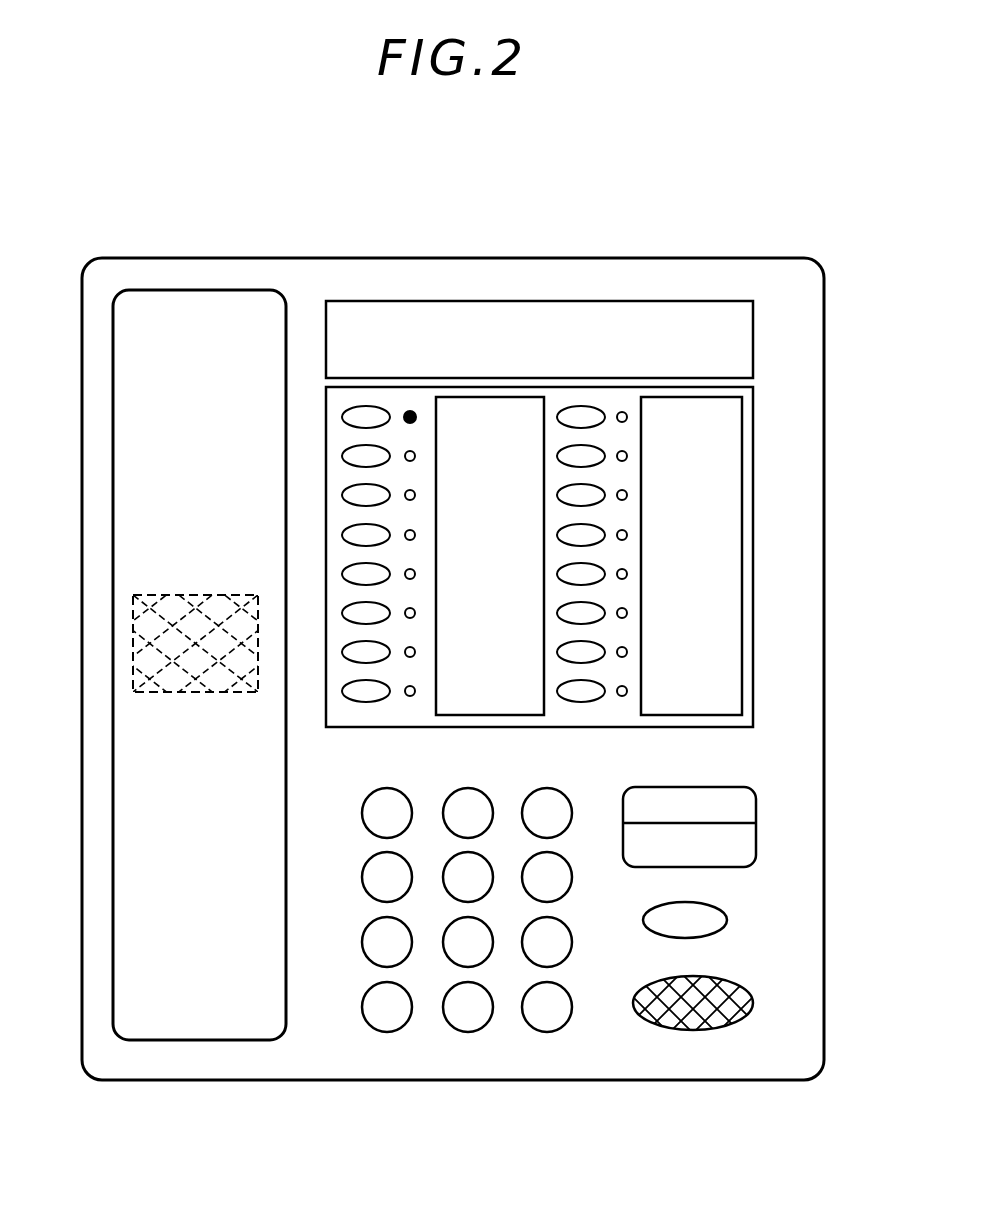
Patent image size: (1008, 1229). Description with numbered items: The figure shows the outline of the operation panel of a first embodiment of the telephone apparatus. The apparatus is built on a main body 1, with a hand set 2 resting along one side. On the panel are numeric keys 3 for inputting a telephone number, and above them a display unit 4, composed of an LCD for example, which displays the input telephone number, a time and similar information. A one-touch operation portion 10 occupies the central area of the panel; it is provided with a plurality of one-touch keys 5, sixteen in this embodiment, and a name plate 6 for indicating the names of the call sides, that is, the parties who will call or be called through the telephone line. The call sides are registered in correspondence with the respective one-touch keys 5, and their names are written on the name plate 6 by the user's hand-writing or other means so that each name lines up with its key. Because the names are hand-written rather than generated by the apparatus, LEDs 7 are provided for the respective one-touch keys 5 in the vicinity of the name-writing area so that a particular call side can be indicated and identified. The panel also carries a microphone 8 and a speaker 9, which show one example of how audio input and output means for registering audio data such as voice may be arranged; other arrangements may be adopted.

The main body 1 is at (235, 258).
The hand set 2 is at (178, 1020).
The numeric key 3 is at (357, 962).
The display unit 4 is at (513, 309).
The one-touch keys 5 is at (352, 413).
The name plate 6 is at (733, 466).
The LEDs 7 is at (408, 412).
The microphone 8 is at (706, 1018).
The speaker 9 is at (135, 685).
The one-touch operation portion 10 is at (753, 584).